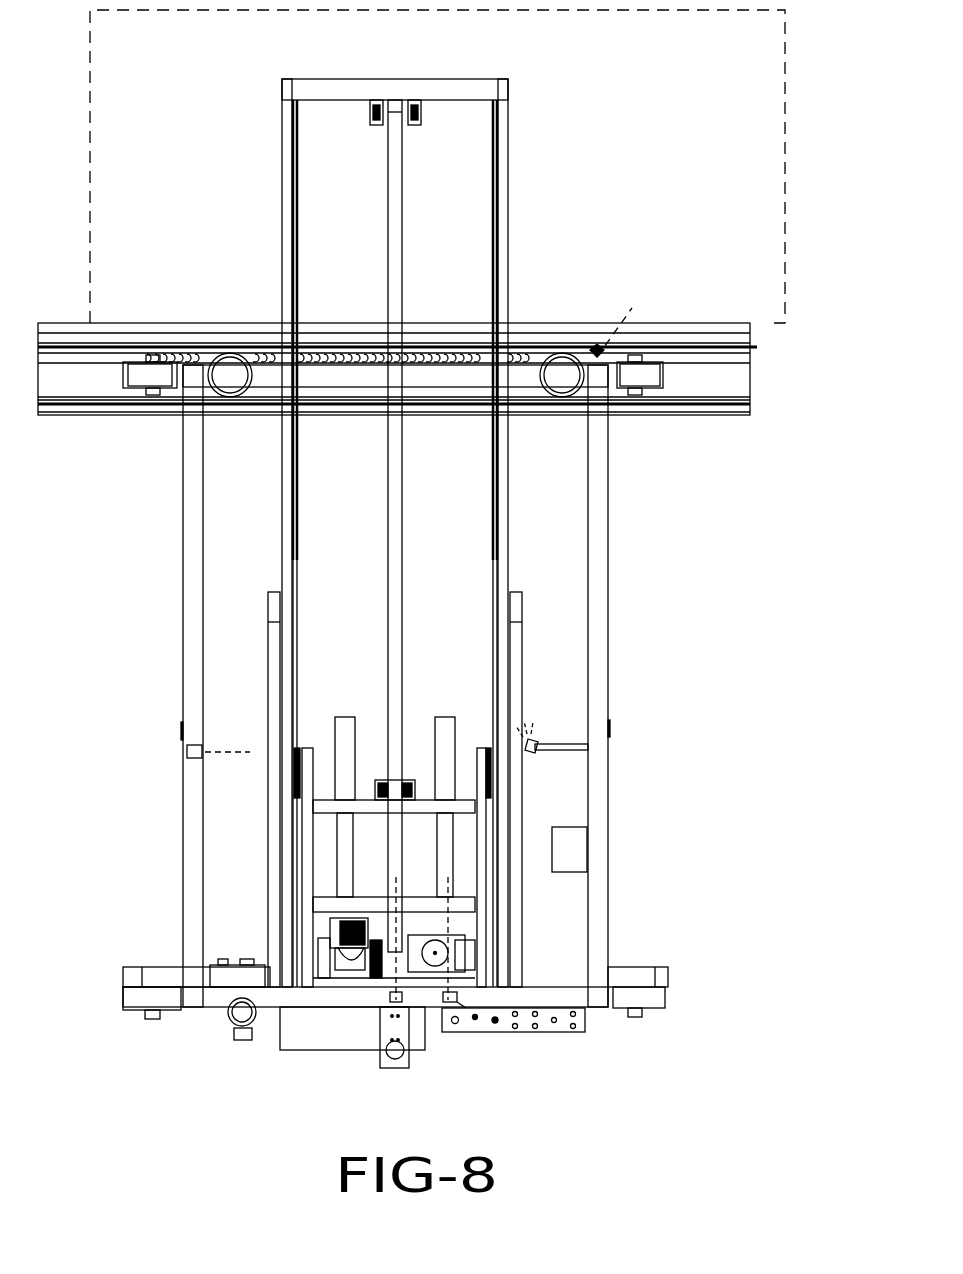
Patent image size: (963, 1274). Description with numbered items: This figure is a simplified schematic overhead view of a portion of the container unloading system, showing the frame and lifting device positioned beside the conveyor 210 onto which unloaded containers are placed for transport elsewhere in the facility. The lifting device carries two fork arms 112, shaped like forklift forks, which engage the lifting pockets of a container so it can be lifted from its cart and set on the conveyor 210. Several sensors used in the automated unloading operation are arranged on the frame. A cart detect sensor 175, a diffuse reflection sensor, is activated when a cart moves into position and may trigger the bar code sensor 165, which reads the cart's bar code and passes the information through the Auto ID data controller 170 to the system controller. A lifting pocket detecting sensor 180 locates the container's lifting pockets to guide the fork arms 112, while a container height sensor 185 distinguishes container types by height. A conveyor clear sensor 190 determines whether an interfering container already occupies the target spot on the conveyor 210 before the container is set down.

The conveyor 210 is at (681, 153).
The conveyor clear sensor 190 is at (594, 350).
The fork arms 112 is at (343, 727).
The bar code sensor 165 is at (542, 740).
The Auto ID data controller 170 is at (571, 847).
The container height sensor 185 is at (185, 752).
The lifting pocket detecting sensor 180 is at (386, 1001).
The cart detect sensor 175 is at (476, 1012).